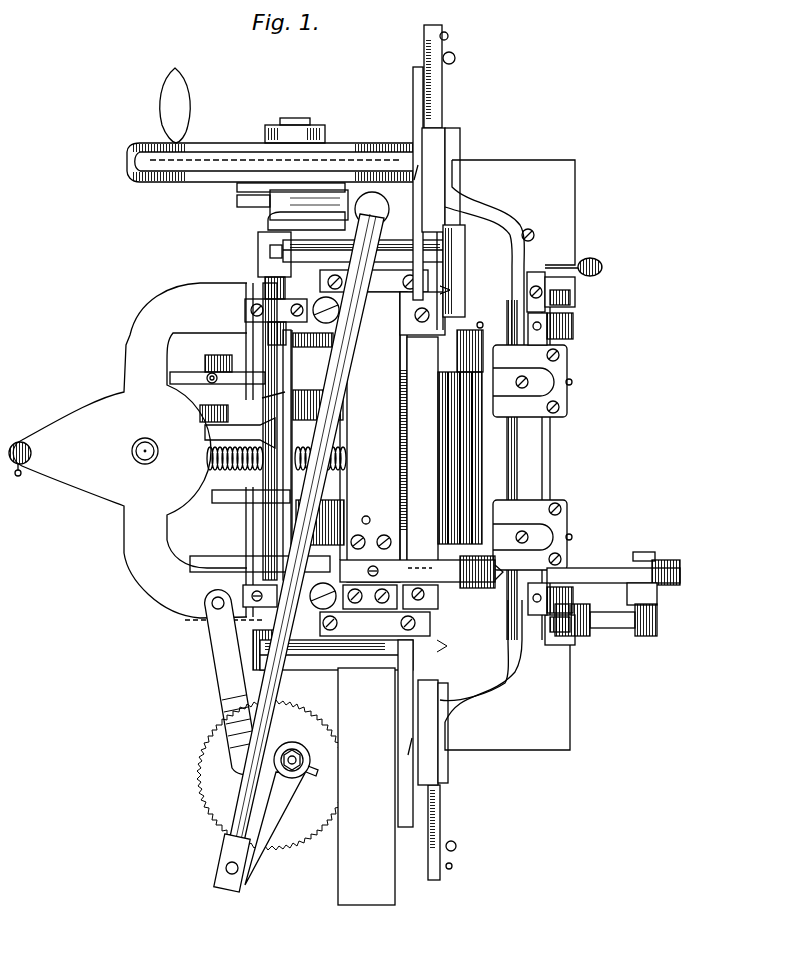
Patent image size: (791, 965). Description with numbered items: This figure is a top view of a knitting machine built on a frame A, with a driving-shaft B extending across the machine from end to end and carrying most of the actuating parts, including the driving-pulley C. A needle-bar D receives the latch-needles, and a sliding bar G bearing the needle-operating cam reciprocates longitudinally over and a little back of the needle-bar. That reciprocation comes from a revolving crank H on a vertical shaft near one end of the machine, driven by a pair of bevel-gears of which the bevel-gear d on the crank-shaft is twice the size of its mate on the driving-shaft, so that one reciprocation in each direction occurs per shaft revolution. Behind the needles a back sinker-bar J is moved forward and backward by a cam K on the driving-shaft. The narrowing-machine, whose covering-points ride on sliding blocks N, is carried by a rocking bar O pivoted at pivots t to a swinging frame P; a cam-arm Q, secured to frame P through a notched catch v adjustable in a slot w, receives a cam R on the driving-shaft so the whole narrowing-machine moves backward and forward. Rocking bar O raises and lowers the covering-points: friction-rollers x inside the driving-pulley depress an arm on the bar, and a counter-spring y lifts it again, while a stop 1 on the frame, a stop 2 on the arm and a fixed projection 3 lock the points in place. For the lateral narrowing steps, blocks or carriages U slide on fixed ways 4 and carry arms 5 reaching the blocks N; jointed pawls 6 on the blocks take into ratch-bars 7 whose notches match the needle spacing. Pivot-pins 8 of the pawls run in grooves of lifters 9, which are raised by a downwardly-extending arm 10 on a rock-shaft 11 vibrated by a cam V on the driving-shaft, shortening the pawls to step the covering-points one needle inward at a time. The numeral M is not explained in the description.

The frame A is at (507, 455).
The driving-shaft B is at (295, 120).
The driving-pulley C is at (286, 162).
The needle-bar D is at (422, 427).
The sliding bar G is at (373, 437).
The revolving crank H is at (281, 813).
The back sinker-bar J is at (462, 347).
The cam K is at (251, 489).
The comb M is at (465, 458).
The sliding blocks N is at (532, 457).
The rocking bar O is at (528, 470).
The swinging frame P is at (552, 464).
The cam-arm Q is at (613, 569).
The cam R is at (260, 561).
The blocks or carriages U is at (439, 456).
The cam V is at (240, 425).
The bevel-gear d is at (272, 775).
The pivots t is at (560, 466).
The notched catch v is at (606, 609).
The slot w is at (656, 568).
The counter-spring y is at (573, 258).
The friction-rollers x is at (445, 292).
The friction-roller or stop 1 is at (282, 431).
The stop 2 is at (421, 572).
The fixed projection 3 is at (225, 682).
The fixed ways 4 is at (364, 247).
The arms 5 is at (508, 448).
The jointed pawls 6 is at (301, 542).
The ratch-bars 7 is at (440, 452).
The pivot-pins 8 is at (410, 453).
The lifters 9 is at (412, 460).
The downwardly-extending arm 10 is at (128, 450).
The rock-shaft 11 is at (273, 399).